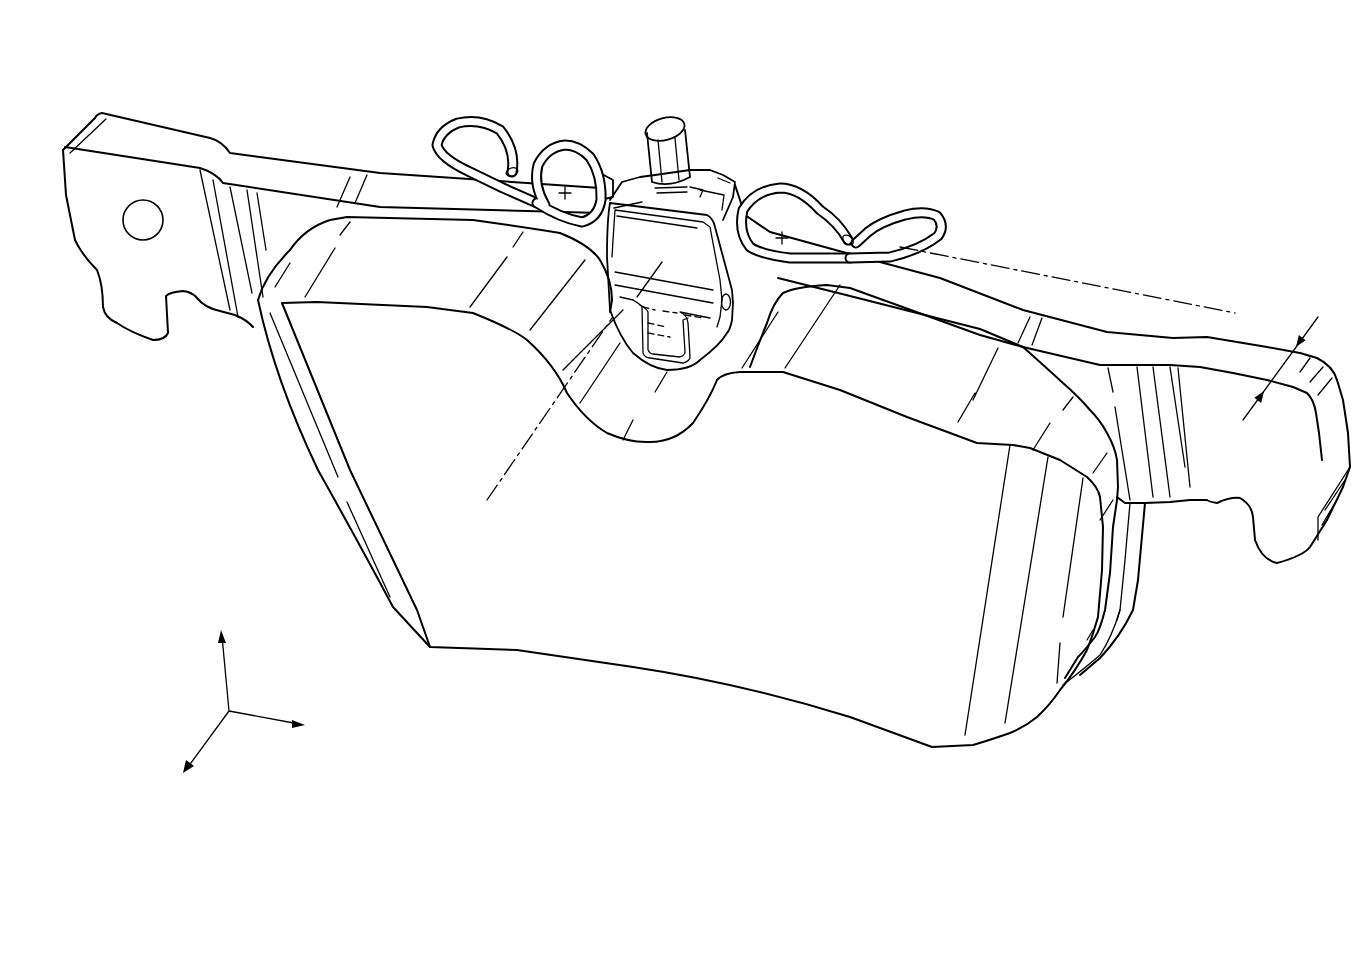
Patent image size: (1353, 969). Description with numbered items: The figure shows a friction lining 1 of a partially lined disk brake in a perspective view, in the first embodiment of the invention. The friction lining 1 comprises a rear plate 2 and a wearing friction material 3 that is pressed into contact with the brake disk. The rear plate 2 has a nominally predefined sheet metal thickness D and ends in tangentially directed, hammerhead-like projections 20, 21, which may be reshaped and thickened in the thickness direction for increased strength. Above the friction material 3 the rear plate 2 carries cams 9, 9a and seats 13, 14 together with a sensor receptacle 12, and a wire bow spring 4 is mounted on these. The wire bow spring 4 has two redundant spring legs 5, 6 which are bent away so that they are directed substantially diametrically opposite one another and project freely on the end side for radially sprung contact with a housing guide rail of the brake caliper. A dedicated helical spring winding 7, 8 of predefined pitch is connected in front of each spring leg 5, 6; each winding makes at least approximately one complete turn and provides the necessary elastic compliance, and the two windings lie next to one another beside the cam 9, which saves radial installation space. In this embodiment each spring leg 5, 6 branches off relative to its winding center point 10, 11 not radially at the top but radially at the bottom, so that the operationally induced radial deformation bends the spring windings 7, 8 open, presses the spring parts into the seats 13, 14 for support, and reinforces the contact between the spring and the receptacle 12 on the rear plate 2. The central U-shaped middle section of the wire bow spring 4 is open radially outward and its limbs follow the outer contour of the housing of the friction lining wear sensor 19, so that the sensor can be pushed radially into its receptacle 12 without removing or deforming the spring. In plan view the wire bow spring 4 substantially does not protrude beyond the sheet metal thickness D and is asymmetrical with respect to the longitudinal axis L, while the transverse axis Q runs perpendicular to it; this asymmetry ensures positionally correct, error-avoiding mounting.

The friction lining 1 is at (95, 83).
The rear plate 2 is at (706, 399).
The friction material 3 is at (480, 617).
The wire bow spring 4 is at (507, 131).
The spring leg 5 is at (849, 192).
The spring leg 6 is at (443, 127).
The spring winding 7 is at (747, 203).
The spring winding 8 is at (583, 193).
The cam 9 is at (540, 160).
The cam 9a is at (827, 223).
The winding center point 10 is at (787, 233).
The winding center point 11 is at (537, 163).
The receptacle 12 is at (697, 267).
The seat 13 is at (850, 233).
The seat 14 is at (602, 173).
The friction lining wear sensor 19 is at (695, 267).
The projection 20 is at (1162, 477).
The projection 21 is at (235, 265).
The longitudinal axis L is at (1168, 298).
The transverse axis Q is at (497, 488).
The sheet metal thickness D is at (1288, 372).